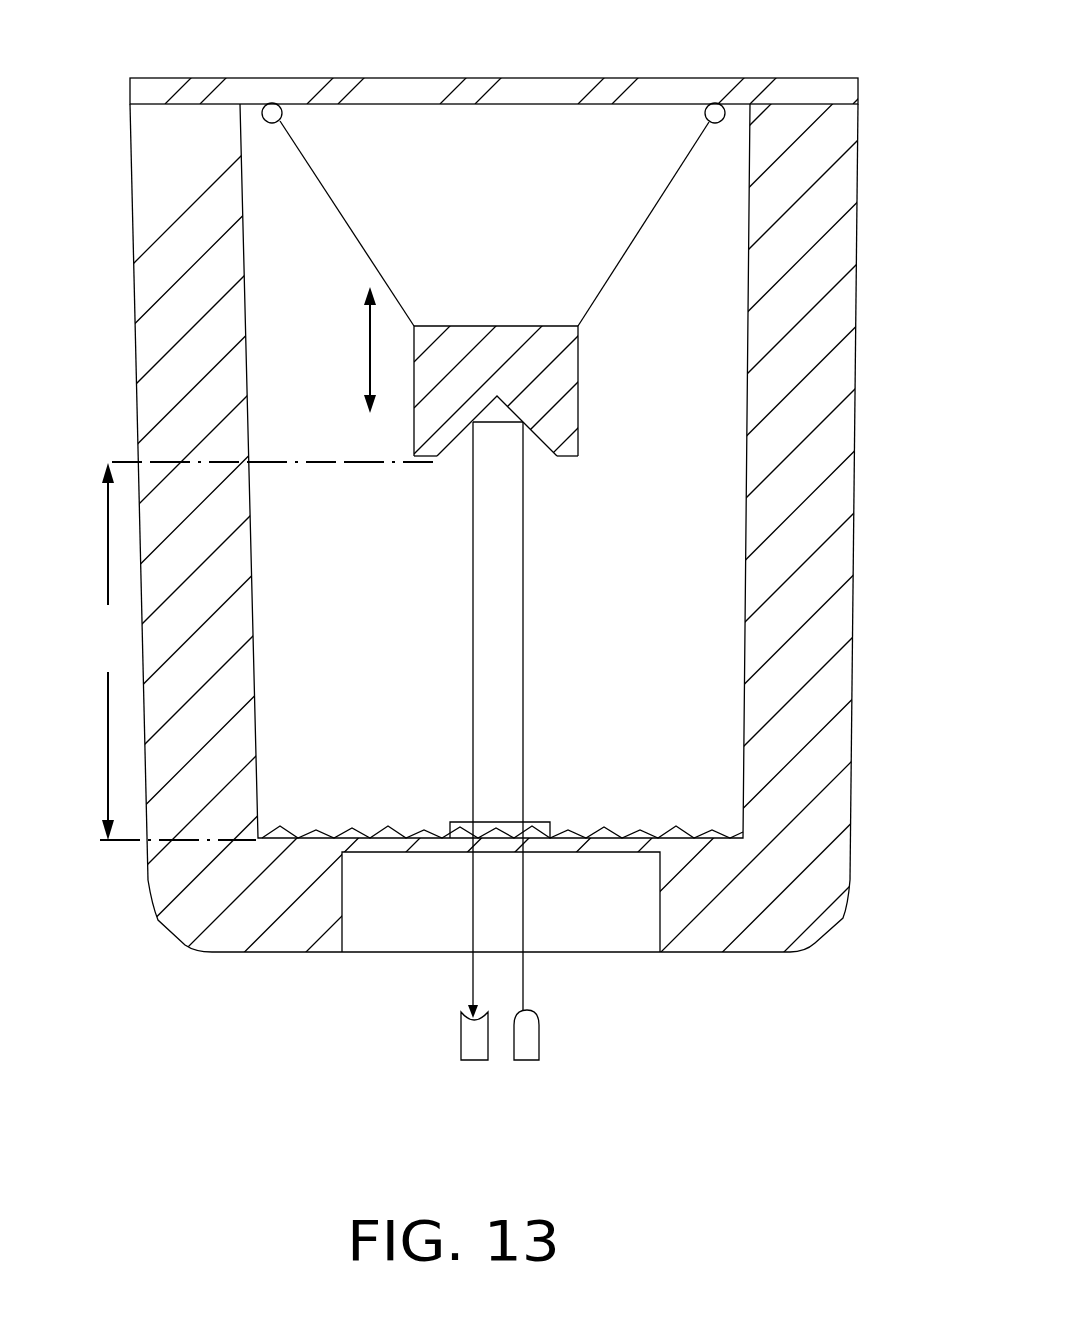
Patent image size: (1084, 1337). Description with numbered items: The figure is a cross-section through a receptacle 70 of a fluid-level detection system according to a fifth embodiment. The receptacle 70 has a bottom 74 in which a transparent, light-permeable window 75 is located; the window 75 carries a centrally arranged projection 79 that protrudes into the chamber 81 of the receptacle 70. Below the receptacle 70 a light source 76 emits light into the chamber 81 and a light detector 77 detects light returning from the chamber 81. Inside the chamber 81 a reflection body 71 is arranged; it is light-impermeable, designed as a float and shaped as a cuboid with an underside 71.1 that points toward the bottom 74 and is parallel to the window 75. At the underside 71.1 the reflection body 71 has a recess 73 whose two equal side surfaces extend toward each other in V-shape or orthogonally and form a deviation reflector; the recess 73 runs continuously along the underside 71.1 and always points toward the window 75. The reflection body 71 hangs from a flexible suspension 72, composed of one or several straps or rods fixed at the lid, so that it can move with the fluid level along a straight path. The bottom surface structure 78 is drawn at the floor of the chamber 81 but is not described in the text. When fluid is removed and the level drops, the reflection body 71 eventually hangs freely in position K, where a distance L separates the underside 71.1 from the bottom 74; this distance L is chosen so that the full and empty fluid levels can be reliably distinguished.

The receptacle 70 is at (500, 668).
The reflection body 71 is at (513, 400).
The underside 71.1 is at (565, 463).
The suspension 72 is at (625, 240).
The recess 73 is at (451, 462).
The bottom 74 is at (277, 930).
The window 75 is at (460, 848).
The light source 76 is at (530, 1028).
The light detector 77 is at (462, 1058).
The bottom surface structure 78 is at (392, 824).
The projection 79 is at (537, 820).
The chamber 81 is at (612, 150).
The position K is at (603, 453).
The distance L is at (110, 651).